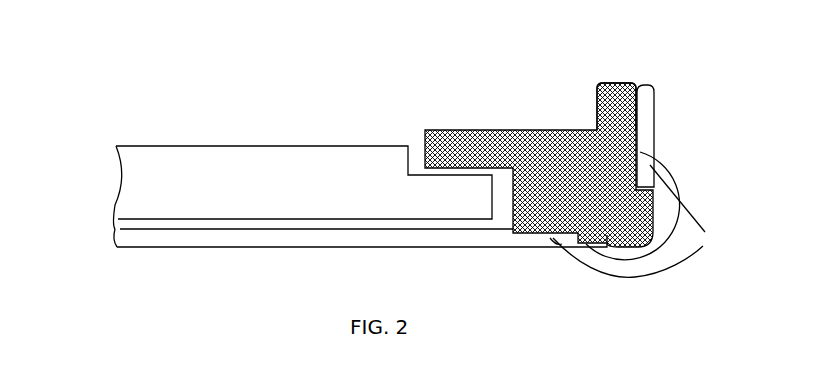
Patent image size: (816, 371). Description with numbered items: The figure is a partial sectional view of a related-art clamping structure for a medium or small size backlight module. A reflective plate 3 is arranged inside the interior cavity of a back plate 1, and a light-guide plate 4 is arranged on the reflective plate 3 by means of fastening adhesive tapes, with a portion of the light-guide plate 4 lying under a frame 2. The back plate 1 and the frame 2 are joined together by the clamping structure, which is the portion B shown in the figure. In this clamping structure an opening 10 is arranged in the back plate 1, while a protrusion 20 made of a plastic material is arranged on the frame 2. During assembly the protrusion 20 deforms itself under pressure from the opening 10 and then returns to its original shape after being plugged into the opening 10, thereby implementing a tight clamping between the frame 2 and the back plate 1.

The back plate 1 is at (692, 211).
The frame 2 is at (558, 163).
The reflective plate 3 is at (135, 225).
The light-guide plate 4 is at (148, 193).
The opening 10 is at (640, 232).
The protrusion 20 is at (636, 228).
The clamping structure portion B is at (628, 214).